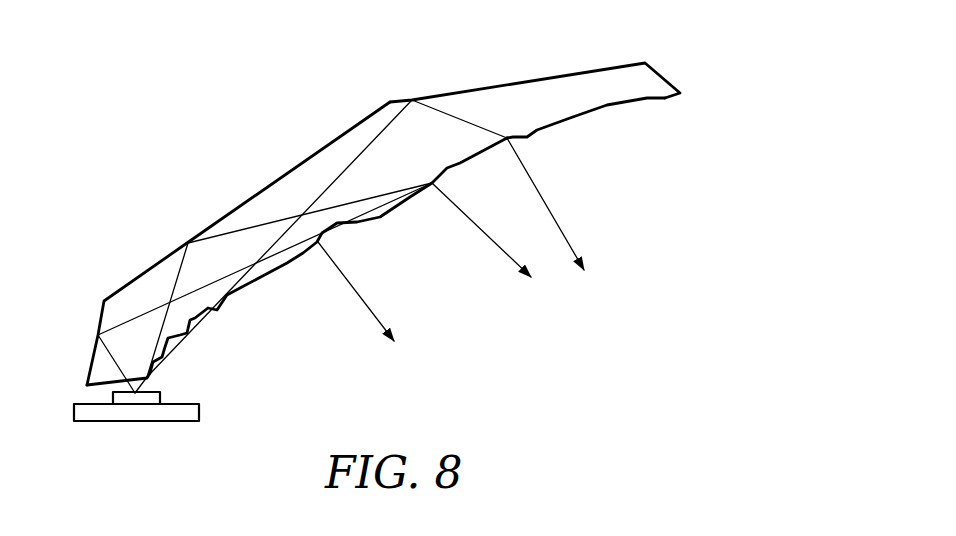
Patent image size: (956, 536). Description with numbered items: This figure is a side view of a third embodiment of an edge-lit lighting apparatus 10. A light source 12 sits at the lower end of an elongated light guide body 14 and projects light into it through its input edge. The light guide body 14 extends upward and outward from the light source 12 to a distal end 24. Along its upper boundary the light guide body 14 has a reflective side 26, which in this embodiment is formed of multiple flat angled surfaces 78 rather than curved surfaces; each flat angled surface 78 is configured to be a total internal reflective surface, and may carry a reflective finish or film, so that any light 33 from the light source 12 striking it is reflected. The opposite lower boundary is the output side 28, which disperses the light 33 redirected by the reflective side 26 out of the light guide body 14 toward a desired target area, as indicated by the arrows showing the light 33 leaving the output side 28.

The edge-lit lighting apparatus 10 is at (816, 53).
The light source 12 is at (199, 413).
The light guide body 14 is at (597, 110).
The distal end 24 is at (660, 73).
The reflective side 26 is at (134, 208).
The output side 28 is at (410, 216).
The light 33 is at (368, 313).
The flat angled surfaces 78 is at (498, 88).